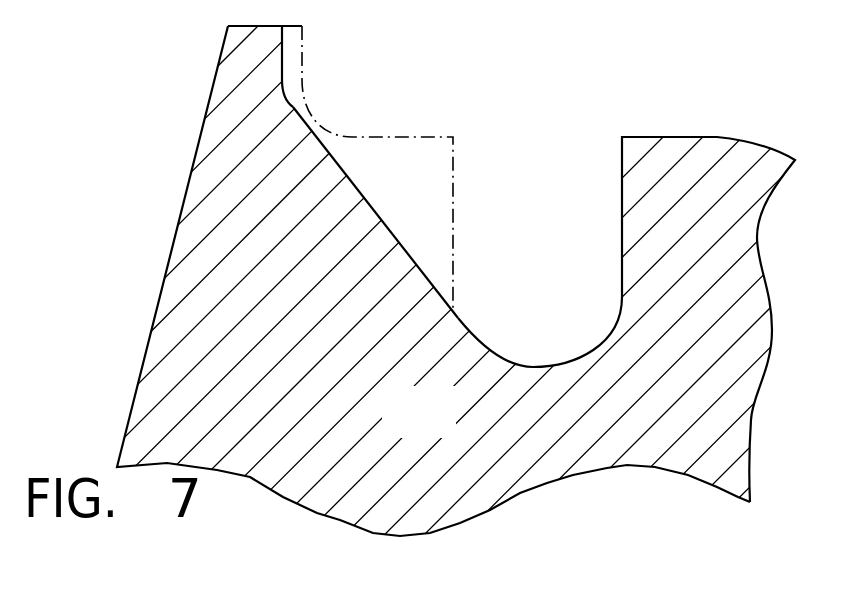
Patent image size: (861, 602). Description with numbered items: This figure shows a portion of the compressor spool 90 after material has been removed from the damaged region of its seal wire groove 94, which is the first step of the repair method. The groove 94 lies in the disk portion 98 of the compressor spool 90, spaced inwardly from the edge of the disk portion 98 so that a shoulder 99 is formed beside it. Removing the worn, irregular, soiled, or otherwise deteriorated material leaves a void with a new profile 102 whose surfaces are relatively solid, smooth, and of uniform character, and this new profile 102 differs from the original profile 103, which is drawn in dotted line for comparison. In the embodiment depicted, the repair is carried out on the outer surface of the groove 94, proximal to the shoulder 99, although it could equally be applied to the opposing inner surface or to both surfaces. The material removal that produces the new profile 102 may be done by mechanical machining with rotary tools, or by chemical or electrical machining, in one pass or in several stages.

The compressor spool 90 is at (152, 325).
The seal wire groove 94 is at (617, 313).
The disk portion 98 is at (436, 421).
The shoulder 99 is at (247, 62).
The new profile 102 is at (360, 197).
The original profile 103 is at (420, 157).